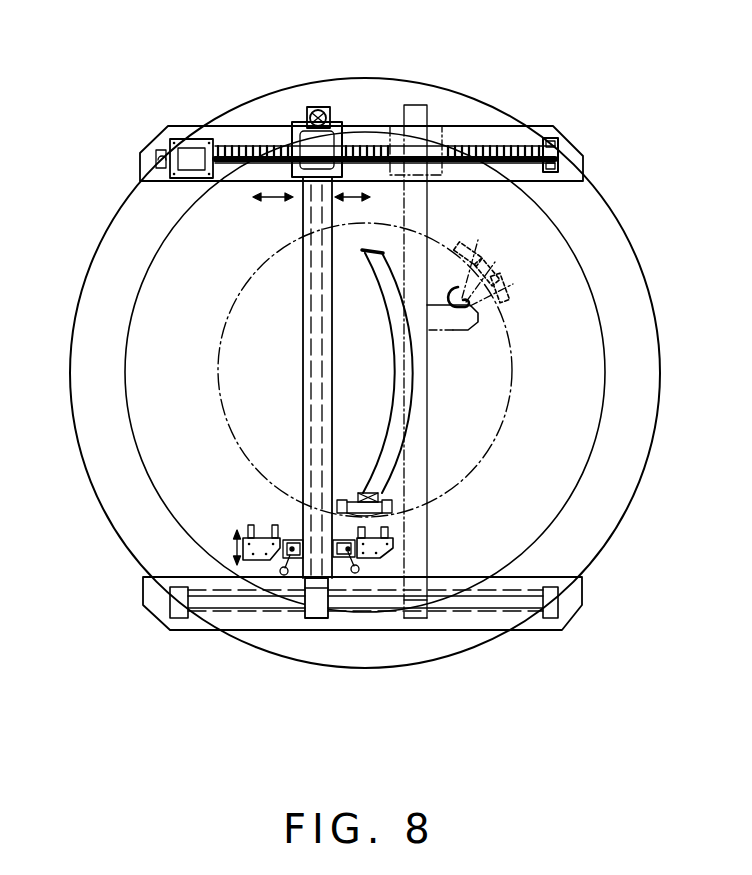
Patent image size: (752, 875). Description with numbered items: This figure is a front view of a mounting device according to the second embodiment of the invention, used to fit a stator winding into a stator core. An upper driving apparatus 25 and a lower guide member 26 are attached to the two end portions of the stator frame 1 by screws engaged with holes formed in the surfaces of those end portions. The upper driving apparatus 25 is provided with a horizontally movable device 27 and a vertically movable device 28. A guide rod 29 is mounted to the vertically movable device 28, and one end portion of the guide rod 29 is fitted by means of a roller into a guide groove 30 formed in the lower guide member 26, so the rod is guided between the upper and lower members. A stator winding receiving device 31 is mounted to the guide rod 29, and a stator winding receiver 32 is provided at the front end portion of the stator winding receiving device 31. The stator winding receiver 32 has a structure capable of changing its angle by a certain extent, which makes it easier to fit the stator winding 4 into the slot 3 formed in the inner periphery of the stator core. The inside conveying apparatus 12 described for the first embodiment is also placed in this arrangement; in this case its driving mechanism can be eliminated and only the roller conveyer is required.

The stator frame 1 is at (100, 268).
The slot 3 is at (513, 285).
The stator winding 4 is at (395, 411).
The inside conveying apparatus 12 is at (392, 527).
The upper driving apparatus 25 is at (505, 138).
The lower guide member 26 is at (380, 638).
The horizontally movable device 27 is at (187, 139).
The vertically movable device 28 is at (328, 107).
The guide rod 29 is at (303, 380).
The guide groove 30 is at (492, 600).
The stator winding receiving device 31 is at (395, 545).
The stator winding receiver 32 is at (253, 525).